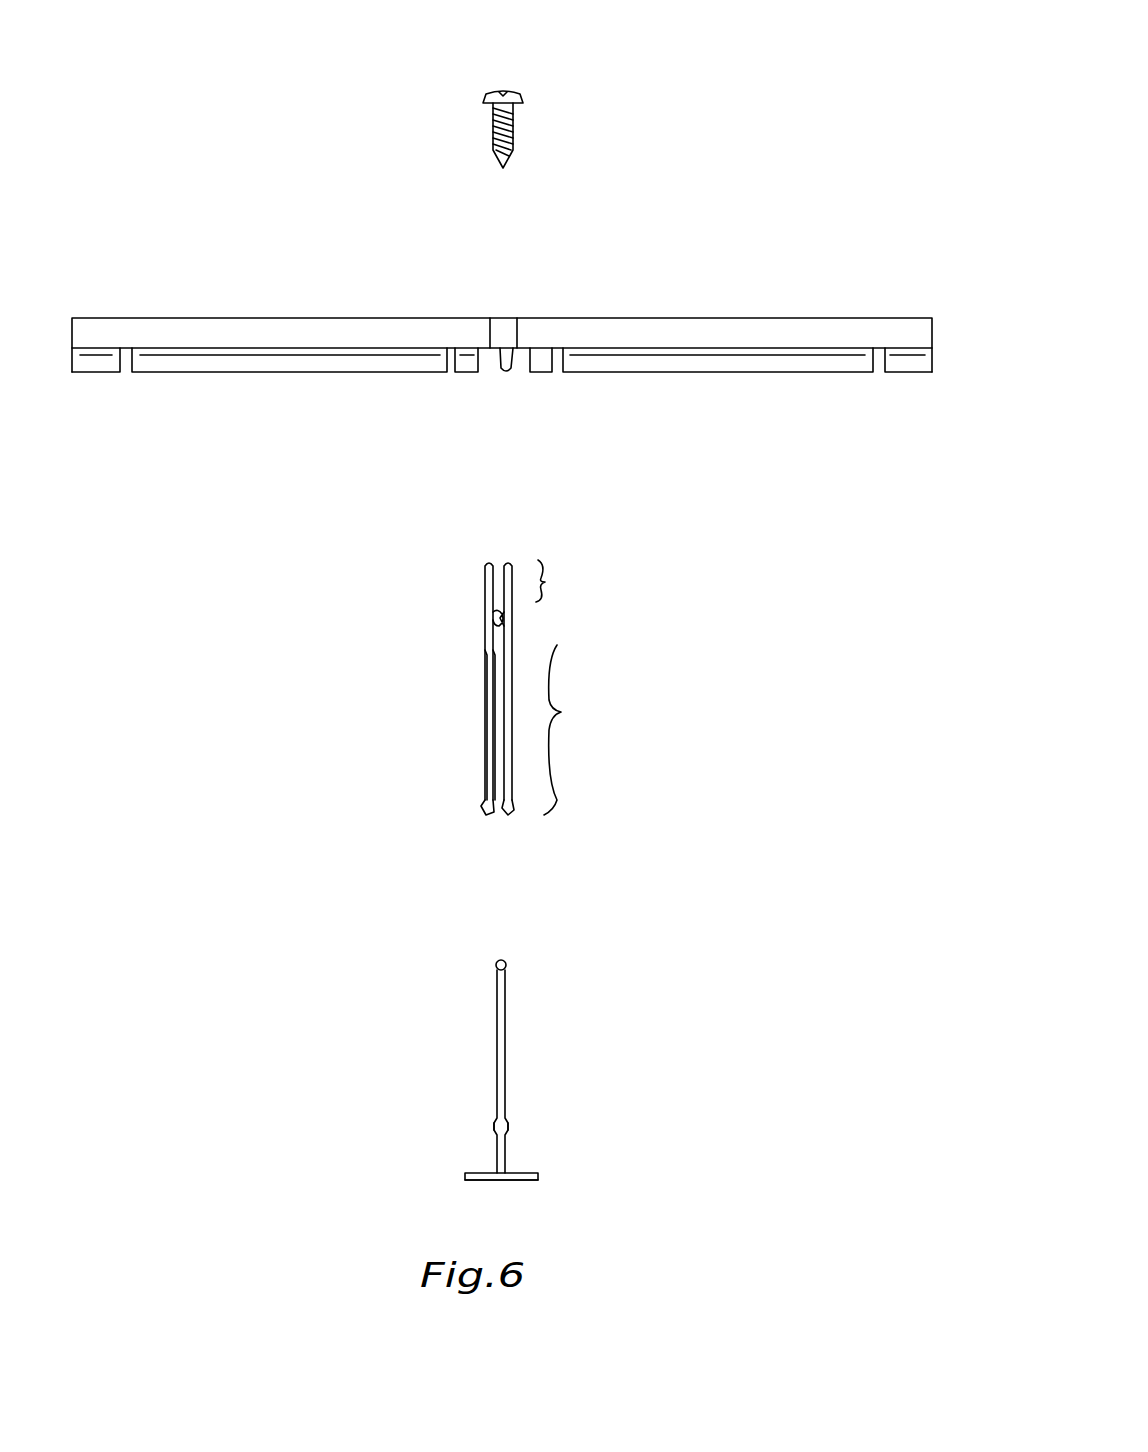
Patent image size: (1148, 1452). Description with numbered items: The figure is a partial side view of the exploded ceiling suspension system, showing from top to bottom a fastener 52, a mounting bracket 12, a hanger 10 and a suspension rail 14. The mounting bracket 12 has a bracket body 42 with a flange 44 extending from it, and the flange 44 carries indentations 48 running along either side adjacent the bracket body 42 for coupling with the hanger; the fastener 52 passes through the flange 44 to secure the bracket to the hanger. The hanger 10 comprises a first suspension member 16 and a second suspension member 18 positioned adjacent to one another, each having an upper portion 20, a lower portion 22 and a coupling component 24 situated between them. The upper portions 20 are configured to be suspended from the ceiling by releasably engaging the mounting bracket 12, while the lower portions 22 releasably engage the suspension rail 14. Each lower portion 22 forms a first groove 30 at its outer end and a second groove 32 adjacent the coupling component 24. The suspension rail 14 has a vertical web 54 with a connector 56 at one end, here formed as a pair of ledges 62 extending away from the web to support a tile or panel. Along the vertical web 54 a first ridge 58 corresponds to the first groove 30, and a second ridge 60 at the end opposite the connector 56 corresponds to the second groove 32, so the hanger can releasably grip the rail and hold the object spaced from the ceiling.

The hanger 10 is at (520, 724).
The mounting bracket 12 is at (207, 300).
The suspension rail 14 is at (506, 1086).
The first suspension member 16 is at (485, 572).
The second suspension member 18 is at (513, 621).
The upper portion 20 is at (568, 580).
The lower portion 22 is at (579, 730).
The coupling component 24 is at (514, 618).
The first groove 30 is at (487, 812).
The second groove 32 is at (485, 645).
The bracket body 42 is at (720, 330).
The flange 44 is at (180, 373).
The indentation 48 is at (508, 352).
The fastener 52 is at (510, 92).
The vertical web 54 is at (506, 1032).
The connector 56 is at (465, 1178).
The first ridge 58 is at (508, 1128).
The second ridge 60 is at (506, 963).
The ledge 62 is at (530, 1171).